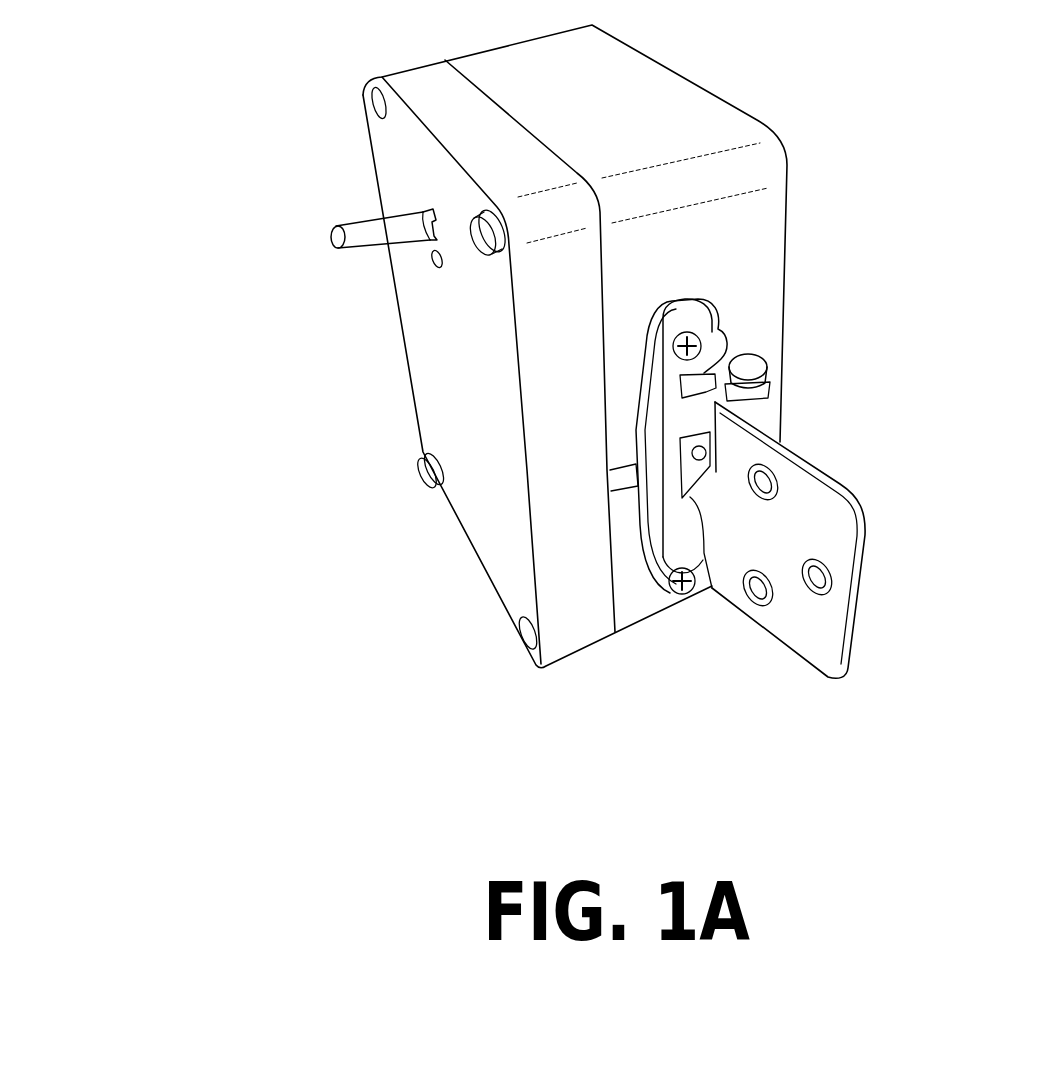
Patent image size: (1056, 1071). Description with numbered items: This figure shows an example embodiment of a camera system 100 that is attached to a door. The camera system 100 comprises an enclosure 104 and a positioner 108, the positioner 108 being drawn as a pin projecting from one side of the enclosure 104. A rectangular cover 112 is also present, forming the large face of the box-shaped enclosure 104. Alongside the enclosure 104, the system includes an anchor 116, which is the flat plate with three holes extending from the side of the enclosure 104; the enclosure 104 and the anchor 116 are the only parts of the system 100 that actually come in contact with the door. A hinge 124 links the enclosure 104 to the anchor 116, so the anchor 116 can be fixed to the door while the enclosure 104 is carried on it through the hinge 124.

The camera system 100 is at (410, 683).
The enclosure 104 is at (640, 132).
The positioner 108 is at (368, 233).
The cover 112 is at (563, 613).
The anchor 116 is at (812, 510).
The hinge 124 is at (697, 403).